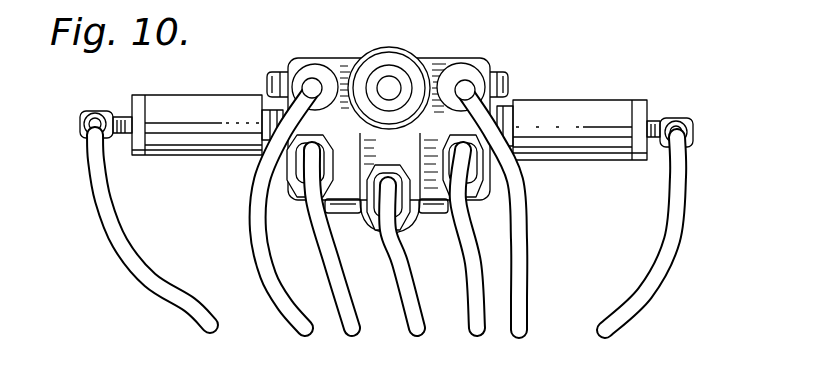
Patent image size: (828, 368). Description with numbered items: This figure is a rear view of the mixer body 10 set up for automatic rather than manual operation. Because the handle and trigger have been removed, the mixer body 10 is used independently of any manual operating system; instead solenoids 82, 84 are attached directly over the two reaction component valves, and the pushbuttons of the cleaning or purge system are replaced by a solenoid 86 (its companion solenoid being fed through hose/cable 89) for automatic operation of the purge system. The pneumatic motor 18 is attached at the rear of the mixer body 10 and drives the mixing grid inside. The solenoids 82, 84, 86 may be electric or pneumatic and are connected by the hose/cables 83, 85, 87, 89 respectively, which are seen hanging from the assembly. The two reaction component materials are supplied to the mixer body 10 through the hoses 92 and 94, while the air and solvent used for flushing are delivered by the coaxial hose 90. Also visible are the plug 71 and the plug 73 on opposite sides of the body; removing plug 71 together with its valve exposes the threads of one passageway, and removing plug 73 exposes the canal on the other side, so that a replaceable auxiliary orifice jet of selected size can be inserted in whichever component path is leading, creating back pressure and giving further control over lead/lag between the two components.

The mixer body 10 is at (447, 56).
The pneumatic motor 18 is at (397, 62).
The plug 71 is at (507, 80).
The plug 73 is at (273, 75).
The solenoid 82 is at (472, 78).
The hose/cable 83 is at (520, 253).
The solenoid 84 is at (315, 70).
The hose/cable 85 is at (257, 238).
The solenoid 86 is at (580, 108).
The hose/cable 87 is at (673, 237).
The hose/cable 89 is at (127, 243).
The coaxial hose 90 is at (390, 262).
The material supply hose 92 is at (463, 262).
The material supply hose 94 is at (322, 262).